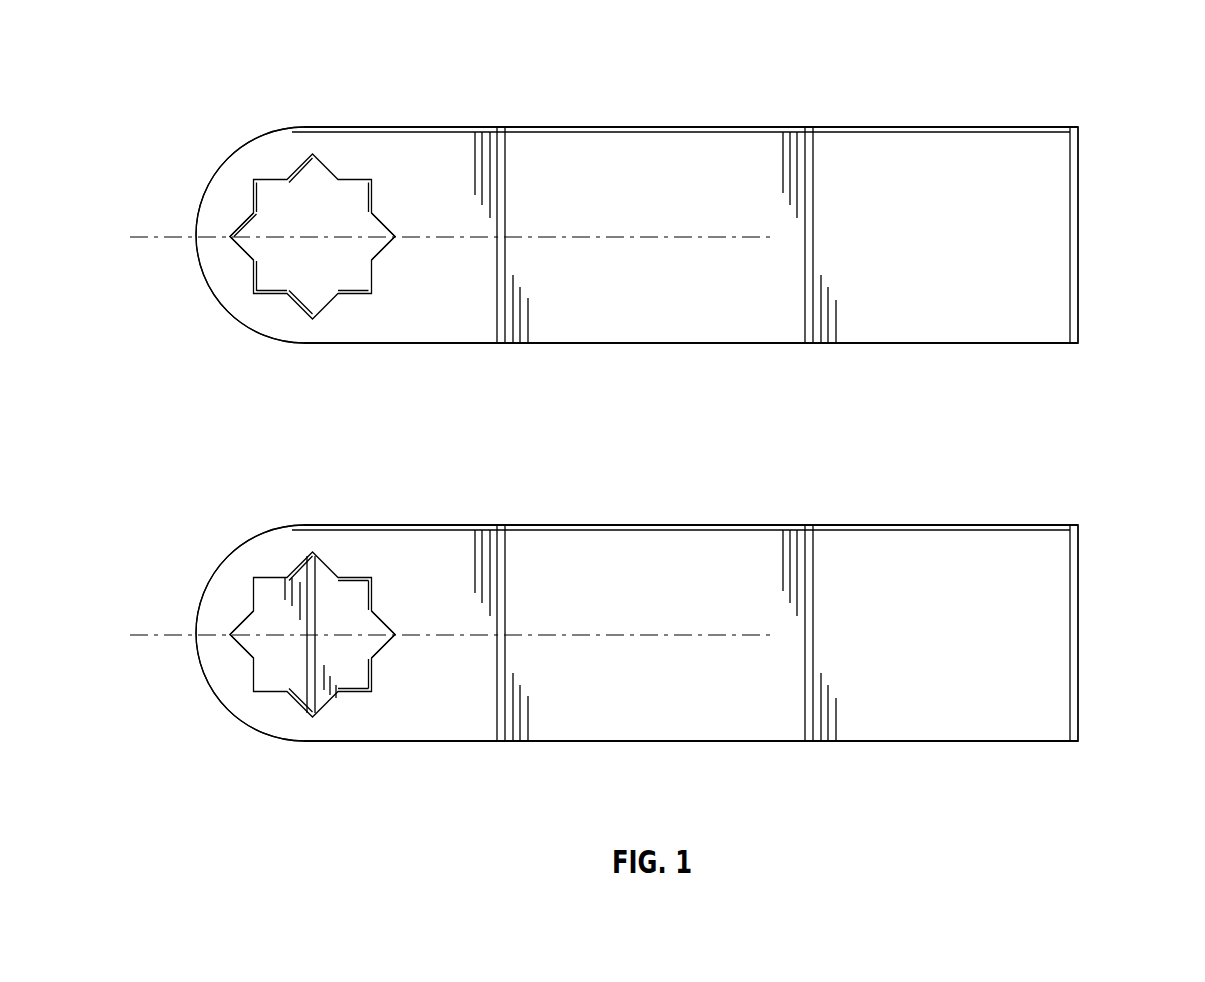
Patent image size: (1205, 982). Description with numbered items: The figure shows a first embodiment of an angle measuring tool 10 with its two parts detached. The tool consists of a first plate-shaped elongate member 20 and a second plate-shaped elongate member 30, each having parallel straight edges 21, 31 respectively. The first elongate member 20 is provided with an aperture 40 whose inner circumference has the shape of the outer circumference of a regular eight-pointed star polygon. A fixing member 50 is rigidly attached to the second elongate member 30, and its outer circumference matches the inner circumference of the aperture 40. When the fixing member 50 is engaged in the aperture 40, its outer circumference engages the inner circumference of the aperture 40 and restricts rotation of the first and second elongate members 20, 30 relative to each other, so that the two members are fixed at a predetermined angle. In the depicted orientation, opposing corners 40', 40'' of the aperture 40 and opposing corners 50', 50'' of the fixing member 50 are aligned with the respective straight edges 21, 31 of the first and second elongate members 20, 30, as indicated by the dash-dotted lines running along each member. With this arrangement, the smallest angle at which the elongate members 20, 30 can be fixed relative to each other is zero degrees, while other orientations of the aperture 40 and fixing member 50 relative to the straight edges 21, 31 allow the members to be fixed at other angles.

The angle measuring tool 10 is at (1016, 59).
The first elongate member 20 is at (1045, 253).
The straight edges 21 is at (738, 127).
The second elongate member 30 is at (1045, 608).
The straight edges 31 is at (762, 525).
The aperture 40 is at (312, 197).
The corner of aperture 40' is at (214, 202).
The corner of aperture 40'' is at (409, 212).
The fixing member 50 is at (312, 584).
The corner of fixing member 50' is at (214, 600).
The corner of fixing member 50'' is at (412, 598).